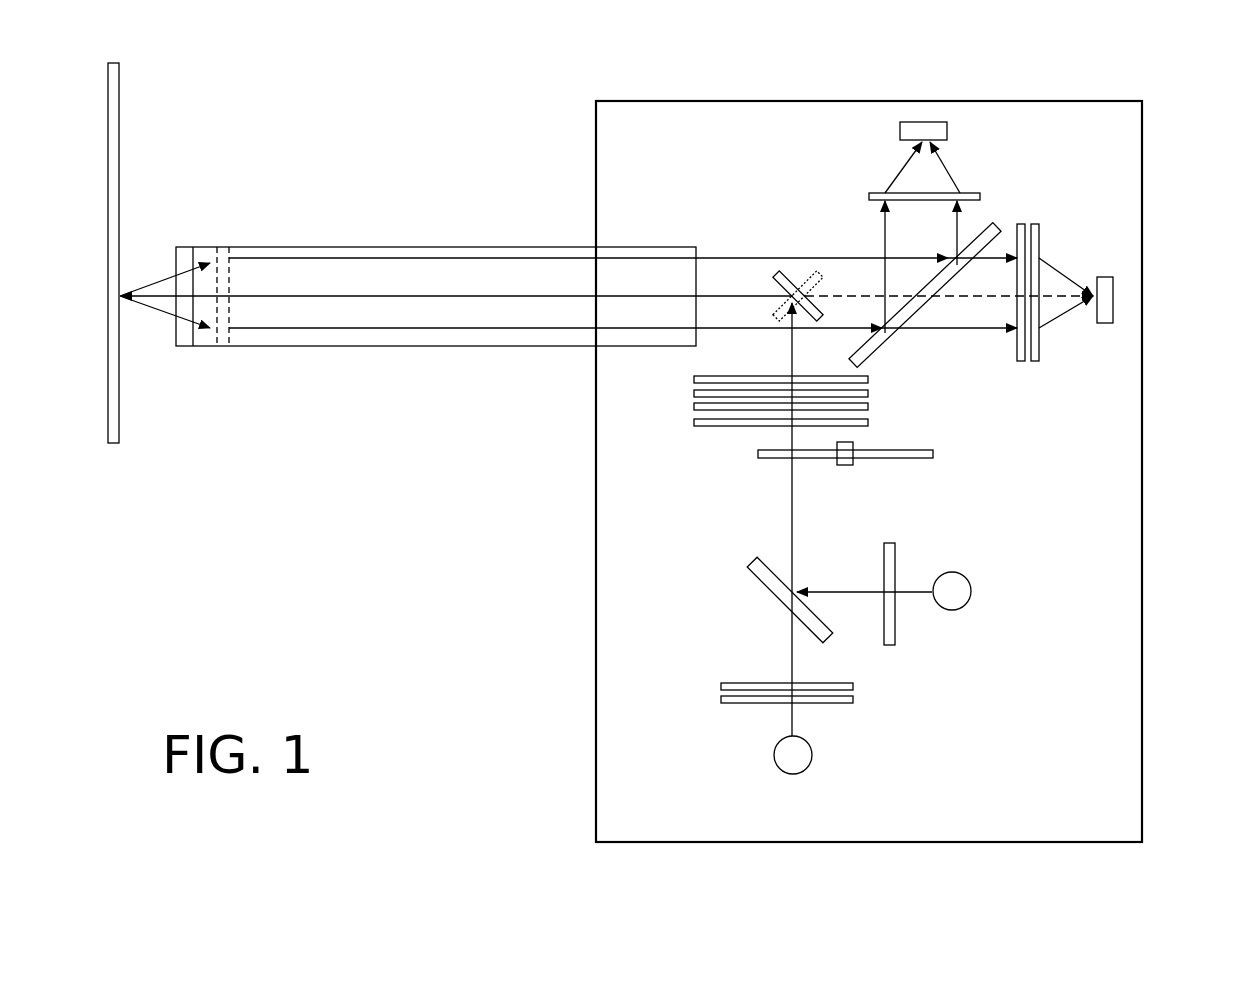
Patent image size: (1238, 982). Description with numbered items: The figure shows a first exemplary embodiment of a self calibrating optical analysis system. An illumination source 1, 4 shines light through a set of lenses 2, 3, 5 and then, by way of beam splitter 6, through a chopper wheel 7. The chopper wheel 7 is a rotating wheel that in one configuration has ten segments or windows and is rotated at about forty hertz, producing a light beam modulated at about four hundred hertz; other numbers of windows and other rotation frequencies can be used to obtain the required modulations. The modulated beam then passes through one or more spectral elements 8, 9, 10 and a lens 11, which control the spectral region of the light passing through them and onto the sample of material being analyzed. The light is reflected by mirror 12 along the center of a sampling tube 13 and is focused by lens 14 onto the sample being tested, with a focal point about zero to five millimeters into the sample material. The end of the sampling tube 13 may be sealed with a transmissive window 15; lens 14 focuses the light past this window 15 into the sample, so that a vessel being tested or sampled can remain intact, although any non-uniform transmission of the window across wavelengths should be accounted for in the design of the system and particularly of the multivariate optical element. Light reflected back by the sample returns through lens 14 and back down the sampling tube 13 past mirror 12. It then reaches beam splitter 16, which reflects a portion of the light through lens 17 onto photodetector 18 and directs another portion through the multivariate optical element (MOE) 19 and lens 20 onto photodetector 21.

The illumination source 1 is at (775, 758).
The lens 2 is at (721, 698).
The lens 3 is at (721, 685).
The illumination source 4 is at (972, 586).
The lens 5 is at (897, 543).
The beam splitter 6 is at (760, 564).
The chopper wheel 7 is at (758, 451).
The spectral element 8 is at (694, 422).
The spectral element 9 is at (694, 407).
The spectral element 10 is at (694, 393).
The lens 11 is at (694, 380).
The mirror 12 is at (786, 272).
The sampling tube 13 is at (350, 246).
The lens 14 is at (227, 246).
The window 15 is at (185, 246).
The beam splitter 16 is at (902, 330).
The lens 17 is at (958, 193).
The photodetector 18 is at (930, 122).
The multivariate optical element (MOE) 19 is at (1021, 224).
The lens 20 is at (1035, 224).
The photodetector 21 is at (1113, 290).